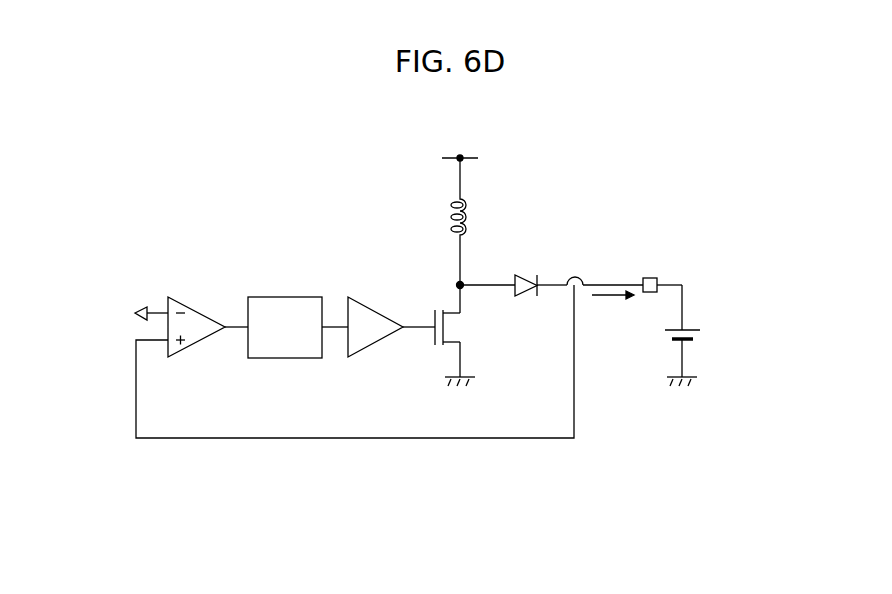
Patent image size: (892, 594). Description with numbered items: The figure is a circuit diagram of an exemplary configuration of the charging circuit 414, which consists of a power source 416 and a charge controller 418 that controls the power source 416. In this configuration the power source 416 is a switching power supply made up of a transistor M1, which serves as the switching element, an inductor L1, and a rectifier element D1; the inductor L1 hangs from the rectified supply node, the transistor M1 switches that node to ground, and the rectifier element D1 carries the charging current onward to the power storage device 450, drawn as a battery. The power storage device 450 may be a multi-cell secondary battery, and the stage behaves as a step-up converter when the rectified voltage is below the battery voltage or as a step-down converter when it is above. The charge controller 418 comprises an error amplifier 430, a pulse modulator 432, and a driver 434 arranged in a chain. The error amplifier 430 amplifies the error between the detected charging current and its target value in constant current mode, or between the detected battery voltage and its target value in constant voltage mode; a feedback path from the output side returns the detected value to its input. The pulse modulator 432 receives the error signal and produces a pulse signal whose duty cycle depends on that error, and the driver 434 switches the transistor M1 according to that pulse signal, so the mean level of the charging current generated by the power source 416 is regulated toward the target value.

The charging circuit 414 is at (428, 480).
The power source 416 is at (560, 387).
The charge controller 418 is at (413, 367).
The error amplifier 430 is at (192, 307).
The pulse modulator 432 is at (275, 297).
The driver 434 is at (381, 314).
The power storage device 450 is at (705, 337).
The inductor L1 is at (470, 218).
The rectifier element D1 is at (528, 273).
The transistor M1 is at (470, 323).